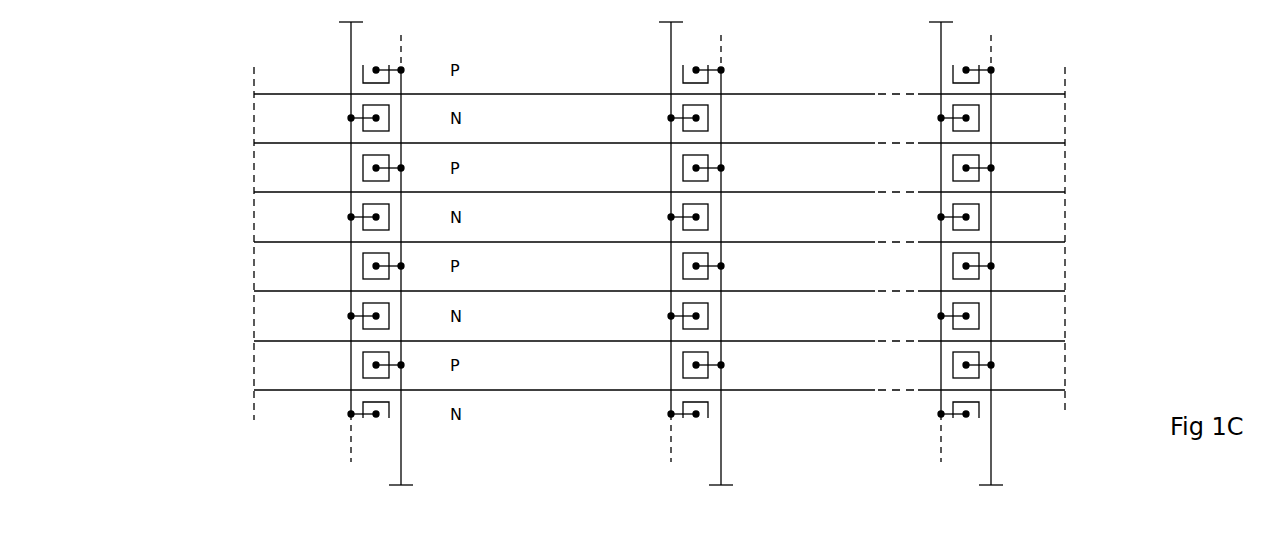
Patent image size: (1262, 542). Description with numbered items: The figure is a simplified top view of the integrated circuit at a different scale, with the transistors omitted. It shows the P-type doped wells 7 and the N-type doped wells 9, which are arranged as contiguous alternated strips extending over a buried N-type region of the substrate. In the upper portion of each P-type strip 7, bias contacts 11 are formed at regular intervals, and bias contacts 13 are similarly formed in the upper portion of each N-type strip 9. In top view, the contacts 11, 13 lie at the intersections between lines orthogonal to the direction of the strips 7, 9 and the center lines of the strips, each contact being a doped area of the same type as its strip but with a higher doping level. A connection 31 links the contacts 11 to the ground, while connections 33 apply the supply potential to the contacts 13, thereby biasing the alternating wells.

The P-type doped well 7 is at (1050, 170).
The N-type doped well 9 is at (1050, 118).
The bias contact 11 is at (683, 160).
The bias contact 13 is at (683, 221).
The connection 31 is at (401, 222).
The connection 33 is at (351, 205).